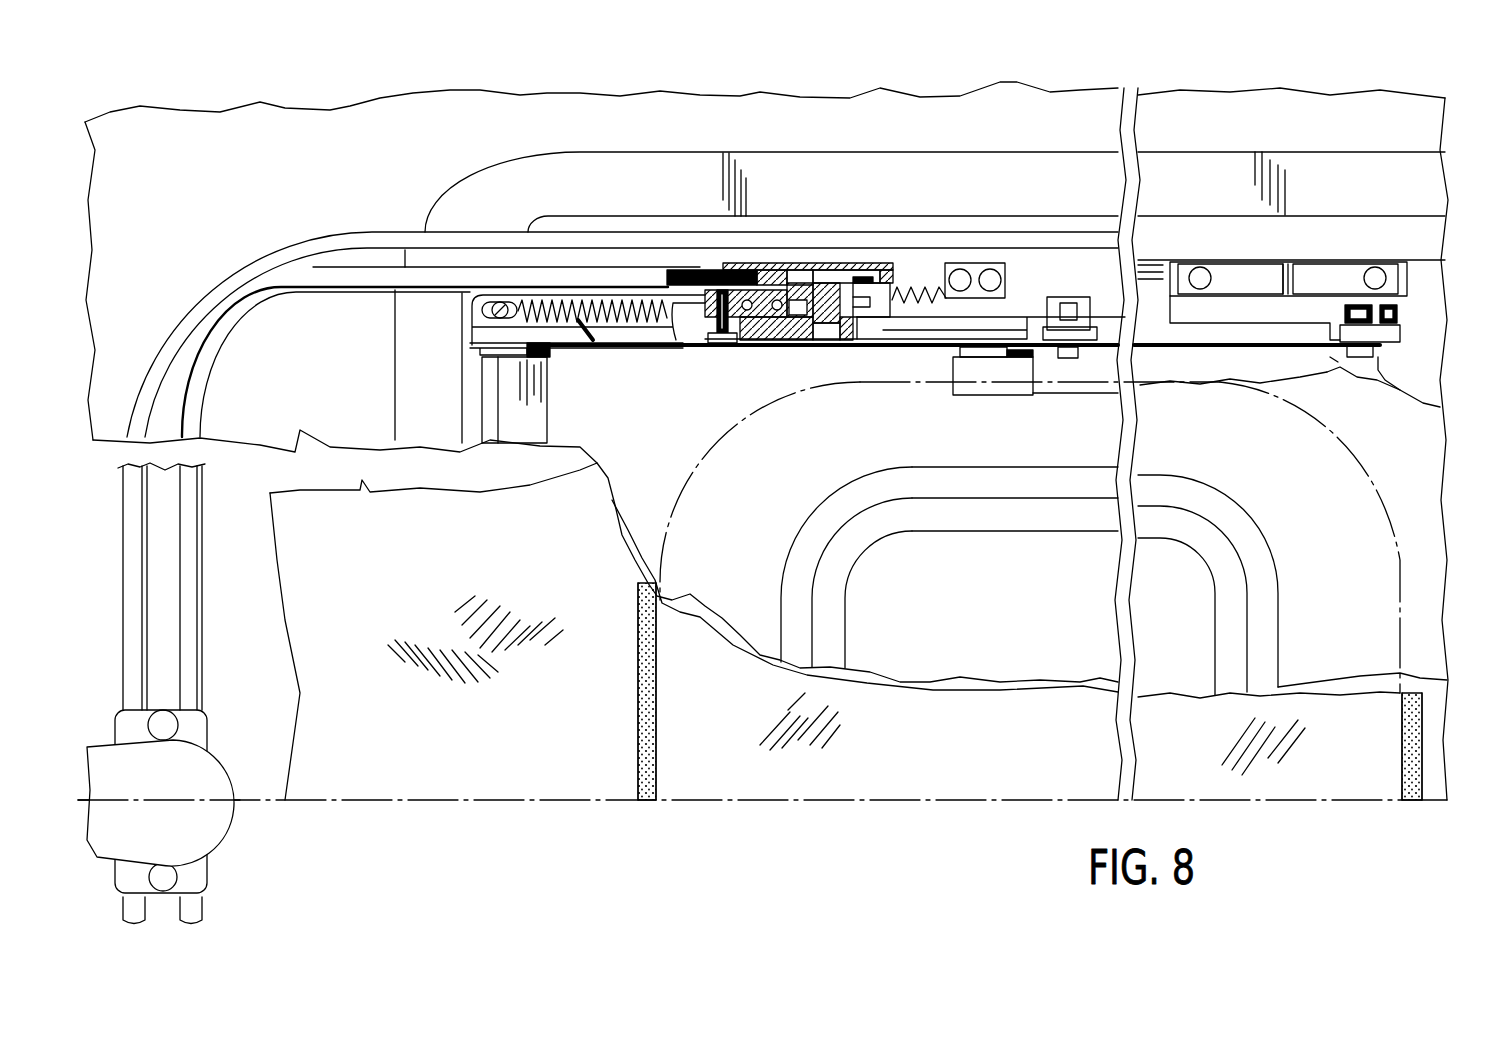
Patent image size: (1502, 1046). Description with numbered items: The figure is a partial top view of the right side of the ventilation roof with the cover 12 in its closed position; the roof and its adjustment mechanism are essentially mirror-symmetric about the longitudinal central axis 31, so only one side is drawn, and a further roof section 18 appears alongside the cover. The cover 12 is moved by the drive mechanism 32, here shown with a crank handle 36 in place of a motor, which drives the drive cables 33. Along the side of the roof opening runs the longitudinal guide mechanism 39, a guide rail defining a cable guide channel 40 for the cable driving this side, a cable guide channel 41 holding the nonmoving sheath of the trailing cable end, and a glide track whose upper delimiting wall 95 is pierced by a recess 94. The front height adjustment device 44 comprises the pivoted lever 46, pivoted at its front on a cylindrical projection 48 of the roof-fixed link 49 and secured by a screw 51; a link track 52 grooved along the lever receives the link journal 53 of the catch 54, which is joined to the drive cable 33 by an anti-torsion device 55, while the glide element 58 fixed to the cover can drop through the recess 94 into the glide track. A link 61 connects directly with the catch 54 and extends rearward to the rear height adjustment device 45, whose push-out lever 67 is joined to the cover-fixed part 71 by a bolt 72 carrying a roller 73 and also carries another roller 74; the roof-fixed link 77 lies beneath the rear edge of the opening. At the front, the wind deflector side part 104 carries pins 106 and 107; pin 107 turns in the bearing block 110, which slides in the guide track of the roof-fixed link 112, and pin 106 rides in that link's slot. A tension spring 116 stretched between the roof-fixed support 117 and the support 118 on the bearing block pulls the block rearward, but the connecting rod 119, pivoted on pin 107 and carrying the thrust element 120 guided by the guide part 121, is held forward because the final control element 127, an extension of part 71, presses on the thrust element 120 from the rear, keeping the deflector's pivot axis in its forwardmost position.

The cover 12 is at (1004, 766).
The housing section 18 is at (488, 766).
The longitudinal central axis 31 is at (855, 806).
The drive mechanism 32 is at (225, 835).
The drive cable 33 is at (713, 268).
The crank handle 36 is at (112, 760).
The longitudinal guide mechanism 39 is at (850, 270).
The cable guide channel 40 is at (880, 270).
The cable guide channel 41 is at (532, 247).
The front height adjustment device 44 is at (886, 355).
The rear height adjustment device 45 is at (1392, 347).
The pivoted lever 46 is at (790, 342).
The cylindrical projection 48 is at (757, 332).
The link 49 is at (680, 332).
The screw 51 is at (722, 344).
The link track 52 is at (860, 347).
The link journal 53 is at (827, 342).
The catch 54 is at (830, 262).
The anti-torsion device 55 is at (785, 262).
The glide element 58 is at (1065, 358).
The link 61 is at (876, 358).
The push-out lever 67 is at (1388, 333).
The part 71 is at (1395, 402).
The bolt 72 is at (1407, 387).
The roller 73 is at (1357, 303).
The roller 74 is at (1400, 314).
The link 77 is at (1227, 310).
The recess 94 is at (1080, 297).
The upper delimiting wall 95 is at (1087, 292).
The side part 104 is at (497, 408).
The pin 106 is at (557, 350).
The pin 107 is at (467, 357).
The bearing block 110 is at (628, 293).
The link 112 is at (463, 290).
The tension spring 116 is at (930, 288).
The support 117 is at (985, 262).
The support 118 is at (498, 303).
The connecting rod 119 is at (632, 345).
The thrust element 120 is at (977, 365).
The guide part 121 is at (1008, 375).
The final control element 127 is at (1025, 315).